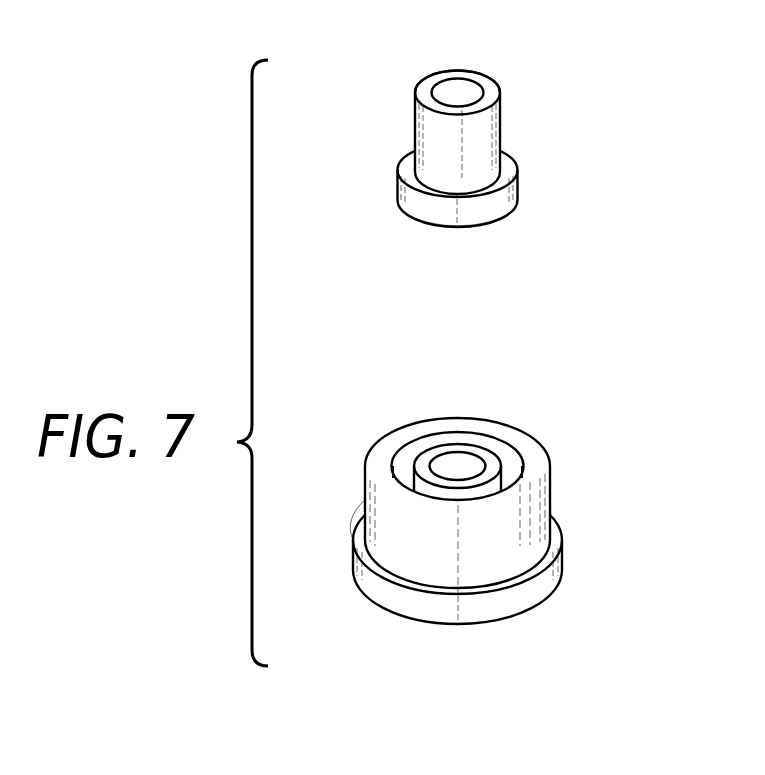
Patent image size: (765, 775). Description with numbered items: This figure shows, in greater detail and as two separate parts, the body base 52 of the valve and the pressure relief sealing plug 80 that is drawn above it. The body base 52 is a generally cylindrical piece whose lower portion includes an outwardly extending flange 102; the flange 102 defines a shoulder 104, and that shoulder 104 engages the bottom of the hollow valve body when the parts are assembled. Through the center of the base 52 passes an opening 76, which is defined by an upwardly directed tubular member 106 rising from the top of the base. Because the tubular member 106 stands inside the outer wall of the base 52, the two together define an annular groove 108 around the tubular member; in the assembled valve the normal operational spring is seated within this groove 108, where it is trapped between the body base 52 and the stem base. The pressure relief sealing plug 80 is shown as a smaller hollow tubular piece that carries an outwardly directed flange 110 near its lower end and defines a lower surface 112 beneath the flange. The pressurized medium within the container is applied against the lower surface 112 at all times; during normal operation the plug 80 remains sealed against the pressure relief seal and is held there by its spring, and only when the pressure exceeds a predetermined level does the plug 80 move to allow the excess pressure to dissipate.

The body base 52 is at (540, 533).
The opening 76 is at (458, 467).
The pressure relief sealing plug 80 is at (500, 128).
The outwardly extending flange 102 is at (398, 600).
The shoulder 104 is at (358, 540).
The tubular member 106 is at (421, 465).
The groove 108 is at (516, 467).
The outwardly directed flange 110 is at (517, 175).
The lower surface 112 is at (432, 222).